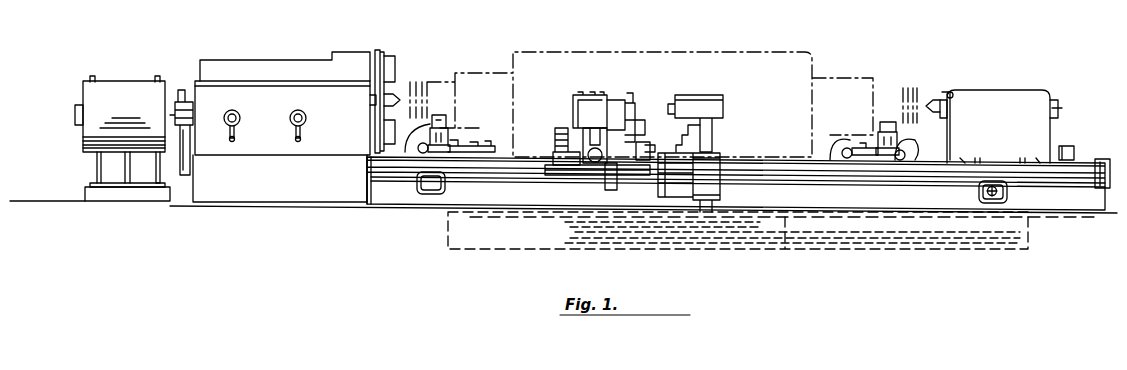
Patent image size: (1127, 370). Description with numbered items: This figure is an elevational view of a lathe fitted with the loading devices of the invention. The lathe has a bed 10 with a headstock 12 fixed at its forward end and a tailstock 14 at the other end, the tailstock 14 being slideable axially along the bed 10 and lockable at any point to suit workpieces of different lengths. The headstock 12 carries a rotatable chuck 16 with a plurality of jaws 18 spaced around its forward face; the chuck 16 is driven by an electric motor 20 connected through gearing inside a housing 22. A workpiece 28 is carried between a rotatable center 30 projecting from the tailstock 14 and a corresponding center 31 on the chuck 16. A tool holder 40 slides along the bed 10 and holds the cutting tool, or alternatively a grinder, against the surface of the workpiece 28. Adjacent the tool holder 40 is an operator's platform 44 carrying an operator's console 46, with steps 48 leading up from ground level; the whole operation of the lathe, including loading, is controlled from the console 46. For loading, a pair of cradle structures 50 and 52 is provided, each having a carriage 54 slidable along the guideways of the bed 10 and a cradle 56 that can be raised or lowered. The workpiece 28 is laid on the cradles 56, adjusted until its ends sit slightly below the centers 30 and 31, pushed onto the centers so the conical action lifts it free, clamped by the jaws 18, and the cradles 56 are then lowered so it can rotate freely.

The bed 10 is at (448, 200).
The headstock 12 is at (260, 66).
The tailstock 14 is at (998, 101).
The chuck 16 is at (378, 56).
The jaws 18 is at (397, 68).
The electric motor 20 is at (127, 100).
The housing 22 is at (267, 144).
The workpiece 28 is at (728, 52).
The center 30 is at (935, 110).
The center 31 is at (376, 117).
The tool holder 40 is at (575, 110).
The operator's platform 44 is at (720, 150).
The operator's console 46 is at (722, 105).
The steps 48 is at (640, 180).
The cradle structure 50 is at (420, 153).
The cradle structure 52 is at (893, 162).
The carriage 54 is at (460, 152).
The cradle 56 is at (444, 128).